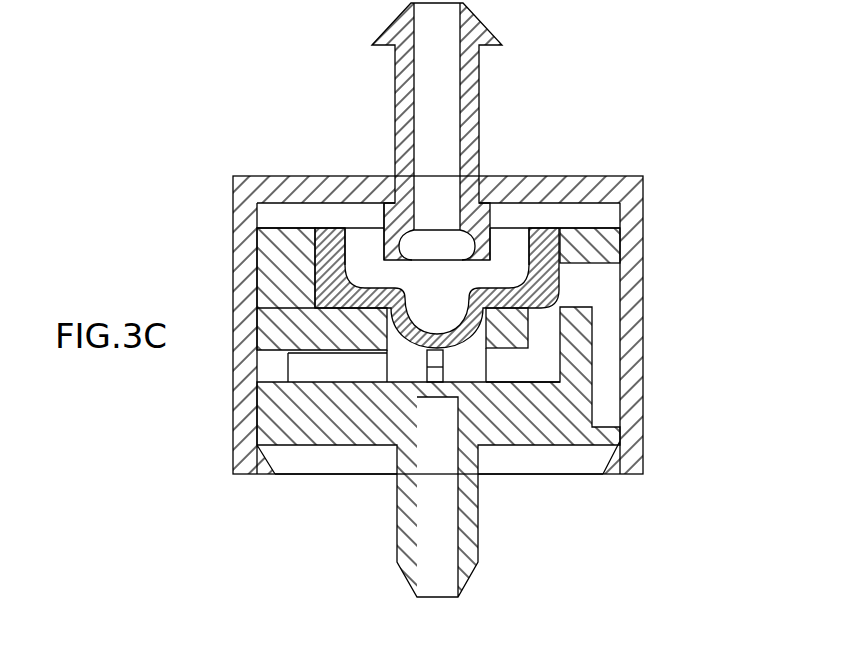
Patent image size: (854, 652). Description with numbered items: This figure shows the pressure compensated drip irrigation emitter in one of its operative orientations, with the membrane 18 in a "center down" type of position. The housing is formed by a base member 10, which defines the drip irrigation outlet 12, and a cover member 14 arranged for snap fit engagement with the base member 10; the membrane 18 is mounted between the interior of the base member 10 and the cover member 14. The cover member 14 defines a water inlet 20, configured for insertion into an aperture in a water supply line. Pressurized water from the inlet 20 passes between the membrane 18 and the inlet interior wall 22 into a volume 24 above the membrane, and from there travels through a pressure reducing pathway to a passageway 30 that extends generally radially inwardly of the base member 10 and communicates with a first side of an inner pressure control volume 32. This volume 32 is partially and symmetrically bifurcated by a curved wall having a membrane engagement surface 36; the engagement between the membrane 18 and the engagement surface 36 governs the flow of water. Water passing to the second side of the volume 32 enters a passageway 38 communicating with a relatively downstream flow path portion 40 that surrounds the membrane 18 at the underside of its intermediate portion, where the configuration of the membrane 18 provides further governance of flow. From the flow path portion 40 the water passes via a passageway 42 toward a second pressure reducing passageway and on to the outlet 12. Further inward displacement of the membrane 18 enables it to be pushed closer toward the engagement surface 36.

The base member 10 is at (568, 457).
The drip irrigation outlet 12 is at (405, 507).
The cover member 14 is at (576, 118).
The membrane 18 is at (560, 280).
The water inlet 20 is at (402, 129).
The inlet interior wall 22 is at (387, 264).
The volume above the membrane 24 is at (510, 250).
The passageway 30 is at (313, 368).
The inner pressure control volume 32 is at (405, 362).
The membrane engagement surface 36 is at (437, 362).
The passageway 38 is at (535, 360).
The downstream flow path portion 40 is at (318, 304).
The passageway 42 is at (607, 278).